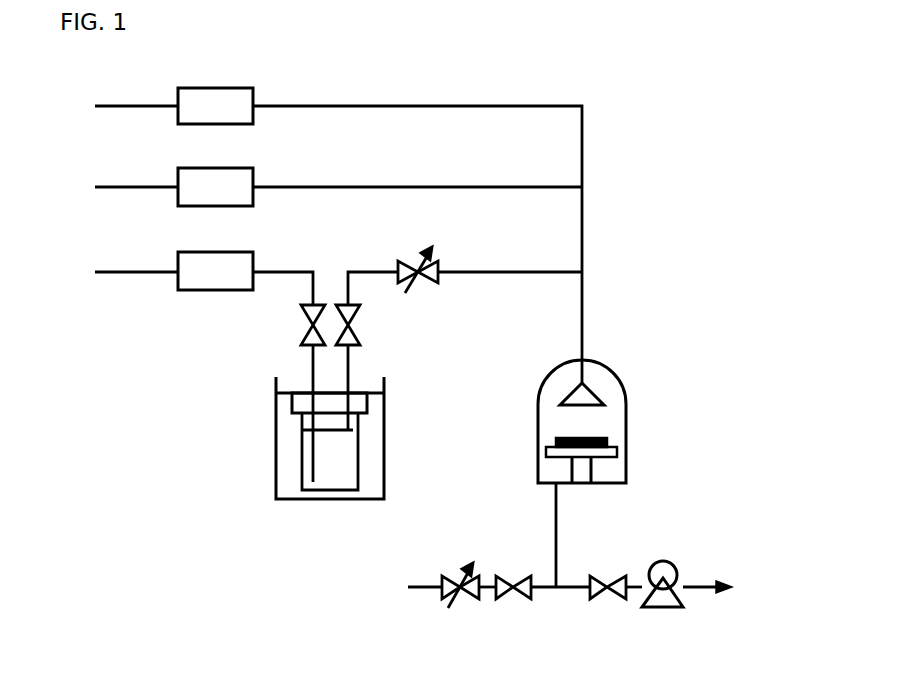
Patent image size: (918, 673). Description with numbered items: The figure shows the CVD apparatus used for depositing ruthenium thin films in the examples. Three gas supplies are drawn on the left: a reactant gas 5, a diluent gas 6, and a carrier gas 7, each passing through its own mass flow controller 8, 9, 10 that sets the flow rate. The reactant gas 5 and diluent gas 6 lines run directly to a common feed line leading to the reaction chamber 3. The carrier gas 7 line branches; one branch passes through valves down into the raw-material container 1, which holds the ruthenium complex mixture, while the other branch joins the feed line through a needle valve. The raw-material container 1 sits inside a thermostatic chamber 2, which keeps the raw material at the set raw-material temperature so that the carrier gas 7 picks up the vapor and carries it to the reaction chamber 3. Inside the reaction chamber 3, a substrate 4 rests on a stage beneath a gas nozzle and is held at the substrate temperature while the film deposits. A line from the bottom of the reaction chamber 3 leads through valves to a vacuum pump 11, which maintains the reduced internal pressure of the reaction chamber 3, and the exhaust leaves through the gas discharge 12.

The raw-material container 1 is at (343, 423).
The thermostatic chamber 2 is at (275, 490).
The reaction chamber 3 is at (625, 391).
The substrate 4 is at (556, 438).
The reactant gas 5 is at (122, 107).
The diluent gas 6 is at (122, 188).
The carrier gas 7 is at (122, 273).
The mass flow controller 8 is at (253, 88).
The mass flow controller 9 is at (253, 168).
The mass flow controller 10 is at (253, 252).
The vacuum pump 11 is at (672, 562).
The gas discharge 12 is at (740, 588).